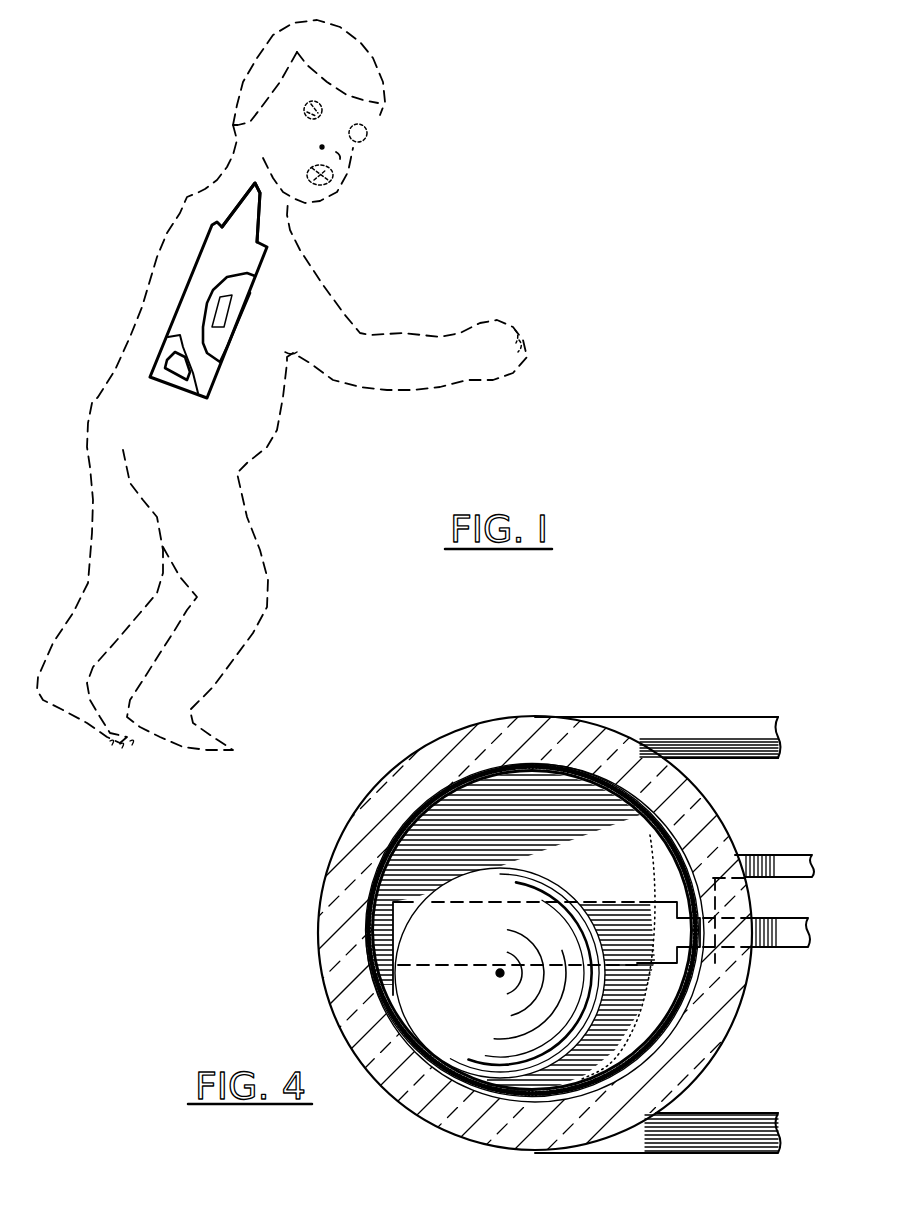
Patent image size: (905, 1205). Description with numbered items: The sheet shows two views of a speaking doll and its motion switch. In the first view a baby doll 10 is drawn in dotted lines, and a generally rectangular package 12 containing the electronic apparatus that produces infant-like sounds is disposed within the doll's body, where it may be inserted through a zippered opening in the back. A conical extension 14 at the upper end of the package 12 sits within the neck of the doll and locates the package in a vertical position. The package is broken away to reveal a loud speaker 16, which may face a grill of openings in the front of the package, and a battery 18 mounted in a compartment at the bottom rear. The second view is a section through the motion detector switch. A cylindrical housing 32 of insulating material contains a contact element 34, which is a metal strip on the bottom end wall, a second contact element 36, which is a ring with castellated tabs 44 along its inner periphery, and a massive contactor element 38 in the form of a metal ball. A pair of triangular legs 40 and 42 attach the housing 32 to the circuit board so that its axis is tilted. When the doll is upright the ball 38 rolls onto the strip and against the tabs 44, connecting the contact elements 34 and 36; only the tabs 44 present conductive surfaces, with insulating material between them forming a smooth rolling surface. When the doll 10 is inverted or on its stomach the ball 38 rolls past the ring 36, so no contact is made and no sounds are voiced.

In FIG. 1, the baby doll 10 is at (277, 443).
In FIG. 1, the package 12 is at (183, 278).
In FIG. 1, the conical extension 14 is at (243, 205).
In FIG. 1, the loud speaker 16 is at (233, 313).
In FIG. 1, the battery 18 is at (180, 373).
In FIG. 4, the housing 32 is at (718, 810).
In FIG. 4, the contact element 34 is at (630, 917).
In FIG. 4, the contact element 36 is at (380, 880).
In FIG. 4, the contactor element 38 is at (477, 942).
In FIG. 4, the triangular leg 40 is at (728, 1125).
In FIG. 4, the triangular leg 42 is at (688, 725).
In FIG. 4, the castellated tabs 44 is at (647, 850).